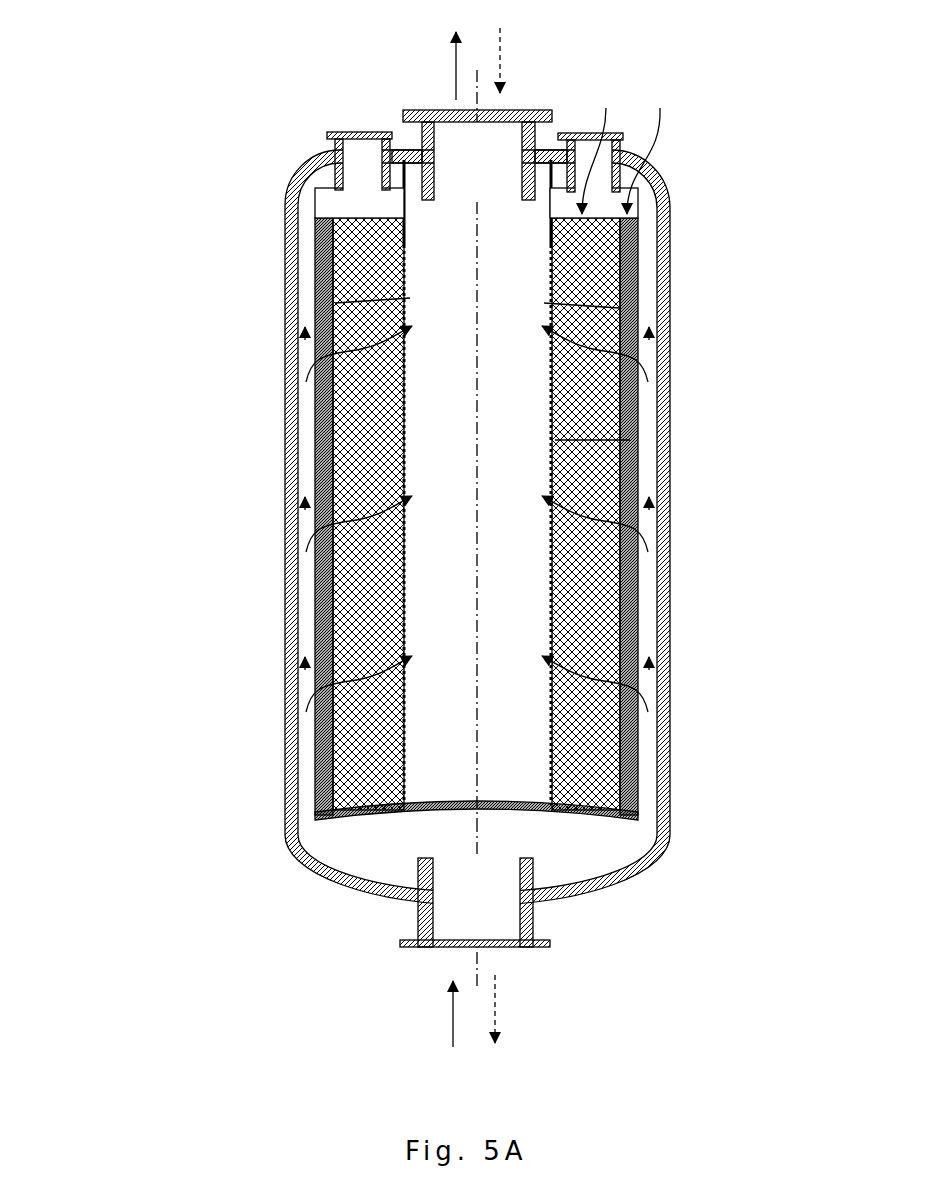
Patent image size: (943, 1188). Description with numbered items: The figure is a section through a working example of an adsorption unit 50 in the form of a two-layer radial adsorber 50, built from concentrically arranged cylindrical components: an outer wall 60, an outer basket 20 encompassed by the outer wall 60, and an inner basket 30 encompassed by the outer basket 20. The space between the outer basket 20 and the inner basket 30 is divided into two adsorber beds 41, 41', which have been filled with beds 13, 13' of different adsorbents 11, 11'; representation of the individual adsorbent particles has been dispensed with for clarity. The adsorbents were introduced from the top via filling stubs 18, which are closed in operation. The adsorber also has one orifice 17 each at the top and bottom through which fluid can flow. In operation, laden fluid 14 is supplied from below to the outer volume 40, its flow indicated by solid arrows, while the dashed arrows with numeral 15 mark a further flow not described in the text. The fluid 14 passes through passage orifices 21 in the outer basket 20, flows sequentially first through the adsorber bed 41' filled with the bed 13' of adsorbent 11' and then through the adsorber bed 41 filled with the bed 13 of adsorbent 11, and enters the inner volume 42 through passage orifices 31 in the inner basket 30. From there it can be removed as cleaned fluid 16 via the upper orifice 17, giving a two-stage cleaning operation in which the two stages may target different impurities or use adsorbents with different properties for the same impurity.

The two-layer radial adsorber 50 is at (135, 108).
The outer wall 60 is at (670, 220).
The outer basket 20 is at (637, 177).
The orifice 17 is at (405, 115).
The filling stubs 18 is at (330, 155).
The cleaned fluid 16 is at (456, 68).
The fluid inlet flow 15 is at (500, 30).
The laden fluid 14 is at (453, 997).
The inner basket 30 is at (558, 133).
The bed 13 is at (608, 144).
The bed 13' is at (659, 144).
The adsorbent 11 is at (682, 516).
The adsorbent 11' is at (651, 514).
The passage orifices 21 is at (662, 420).
The passage orifices 31 is at (645, 470).
The adsorber bed 41 is at (649, 600).
The adsorber bed 41' is at (646, 552).
The inner volume 42 is at (633, 813).
The outer volume 40 is at (612, 849).